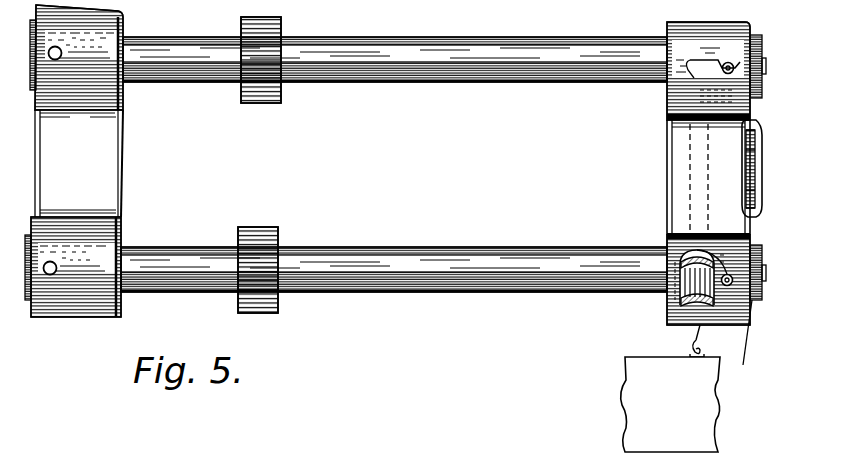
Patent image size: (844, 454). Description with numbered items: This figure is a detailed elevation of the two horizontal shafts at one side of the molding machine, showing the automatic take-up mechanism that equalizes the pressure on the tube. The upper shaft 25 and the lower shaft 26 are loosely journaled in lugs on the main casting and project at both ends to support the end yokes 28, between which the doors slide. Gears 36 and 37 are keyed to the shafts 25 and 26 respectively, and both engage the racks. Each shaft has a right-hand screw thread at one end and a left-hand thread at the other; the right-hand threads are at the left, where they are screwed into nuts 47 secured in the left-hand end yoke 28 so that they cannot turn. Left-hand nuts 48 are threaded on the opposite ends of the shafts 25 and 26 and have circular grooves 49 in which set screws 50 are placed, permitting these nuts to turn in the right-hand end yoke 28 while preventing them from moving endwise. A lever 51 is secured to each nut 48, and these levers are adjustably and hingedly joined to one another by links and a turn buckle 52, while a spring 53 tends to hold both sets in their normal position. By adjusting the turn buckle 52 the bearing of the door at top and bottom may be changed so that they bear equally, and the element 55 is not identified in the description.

The upper shaft 25 is at (443, 82).
The lower shaft 26 is at (412, 253).
The end yoke 28 is at (110, 138).
The gear 36 is at (272, 103).
The gear 37 is at (278, 235).
The nut 47 is at (68, 40).
The left hand nut 48 is at (717, 20).
The circular groove 49 is at (648, 83).
The set screw 50 is at (667, 236).
The lever 51 is at (741, 347).
The turn buckle 52 is at (740, 162).
The spring 53 is at (697, 327).
The weight 55 is at (670, 404).